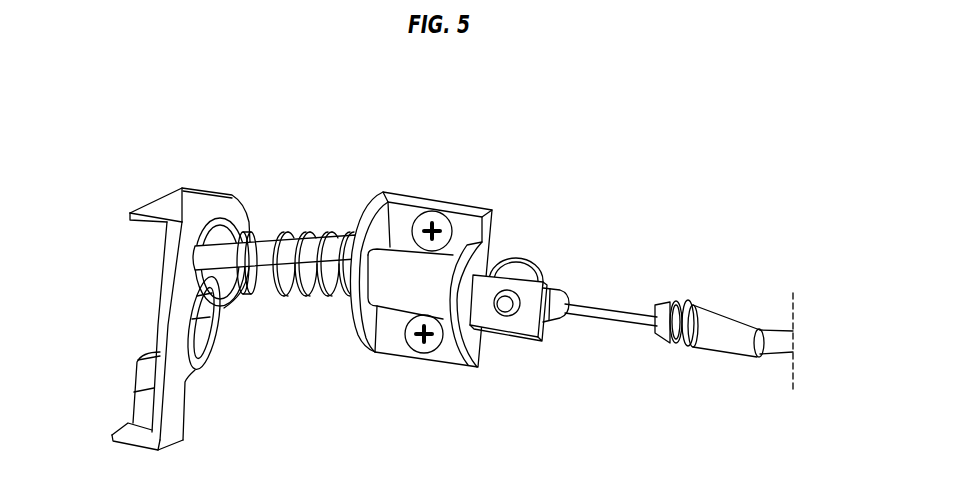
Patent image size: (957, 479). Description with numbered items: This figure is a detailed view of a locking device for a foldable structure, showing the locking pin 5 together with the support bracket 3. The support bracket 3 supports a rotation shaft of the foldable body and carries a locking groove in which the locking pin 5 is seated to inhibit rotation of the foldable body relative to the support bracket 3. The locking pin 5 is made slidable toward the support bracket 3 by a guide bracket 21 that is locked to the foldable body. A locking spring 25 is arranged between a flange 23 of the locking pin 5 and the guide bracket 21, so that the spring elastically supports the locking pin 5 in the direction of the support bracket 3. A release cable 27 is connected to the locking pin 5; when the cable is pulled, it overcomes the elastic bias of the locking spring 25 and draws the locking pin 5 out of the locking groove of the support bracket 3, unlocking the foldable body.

The support bracket 3 is at (170, 207).
The locking pin 5 is at (215, 257).
The guide bracket 21 is at (395, 268).
The flange 23 is at (250, 230).
The locking spring 25 is at (316, 238).
The release cable 27 is at (608, 310).